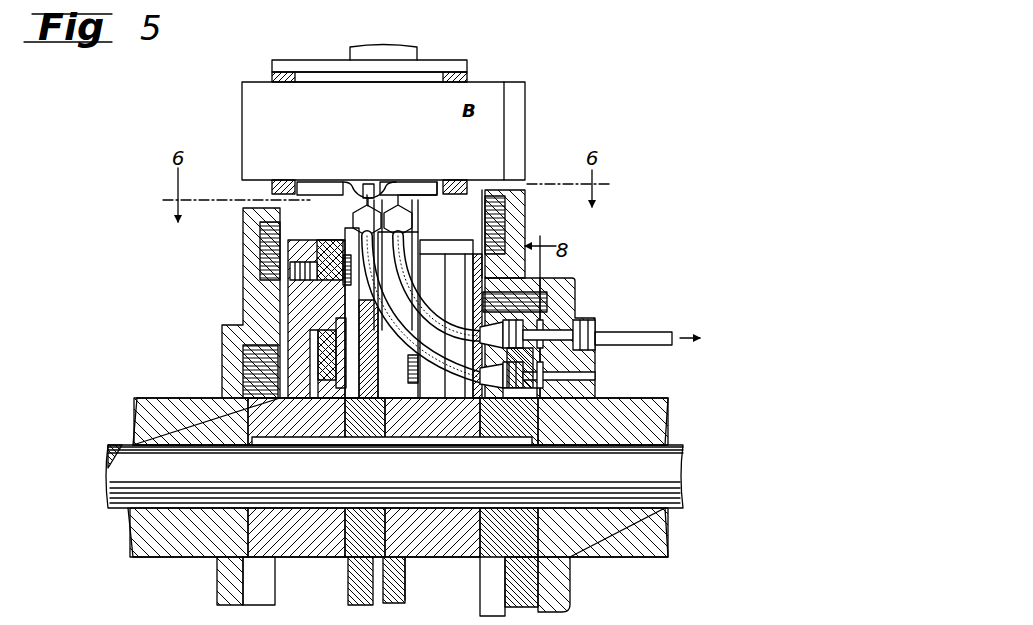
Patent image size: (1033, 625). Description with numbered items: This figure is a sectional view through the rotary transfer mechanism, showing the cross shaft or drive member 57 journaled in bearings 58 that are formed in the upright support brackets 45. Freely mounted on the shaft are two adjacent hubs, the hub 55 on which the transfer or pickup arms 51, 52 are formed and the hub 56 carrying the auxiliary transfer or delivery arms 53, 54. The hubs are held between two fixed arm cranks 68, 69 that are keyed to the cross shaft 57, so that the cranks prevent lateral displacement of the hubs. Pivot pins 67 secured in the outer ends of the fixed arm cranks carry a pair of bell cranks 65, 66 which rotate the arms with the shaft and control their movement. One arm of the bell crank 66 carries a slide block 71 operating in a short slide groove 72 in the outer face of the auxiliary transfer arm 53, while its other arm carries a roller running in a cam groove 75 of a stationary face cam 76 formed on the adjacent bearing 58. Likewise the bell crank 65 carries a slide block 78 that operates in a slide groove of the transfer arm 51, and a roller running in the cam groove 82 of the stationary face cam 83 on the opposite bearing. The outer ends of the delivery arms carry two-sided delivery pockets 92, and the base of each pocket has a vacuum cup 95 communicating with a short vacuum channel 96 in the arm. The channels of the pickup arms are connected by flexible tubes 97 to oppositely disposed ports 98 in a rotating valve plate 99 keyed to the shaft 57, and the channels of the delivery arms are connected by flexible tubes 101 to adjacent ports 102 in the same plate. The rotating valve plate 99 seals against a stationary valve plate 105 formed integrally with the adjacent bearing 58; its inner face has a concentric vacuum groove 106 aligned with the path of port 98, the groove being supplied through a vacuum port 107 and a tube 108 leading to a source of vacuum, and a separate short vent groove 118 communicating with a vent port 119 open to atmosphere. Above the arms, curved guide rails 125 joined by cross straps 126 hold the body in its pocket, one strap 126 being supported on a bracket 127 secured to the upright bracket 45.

The upright support bracket 45 is at (224, 595).
The transfer or pickup arm 51 is at (418, 190).
The transfer or pickup arm 52 is at (398, 591).
The auxiliary transfer or delivery arm 53 is at (392, 190).
The auxiliary transfer or delivery arm 54 is at (356, 593).
The hub 55 is at (410, 563).
The hub 56 is at (352, 552).
The cross shaft or drive member 57 is at (682, 457).
The bearing 58 is at (655, 419).
The bell crank 65 is at (430, 240).
The bell crank 66 is at (332, 240).
The pivot pin 67 is at (349, 276).
The fixed arm crank 68 is at (462, 240).
The fixed arm crank 69 is at (306, 243).
The slide block 71 is at (350, 360).
The slide groove 72 is at (342, 381).
The cam groove 75 is at (258, 234).
The stationary face cam 76 is at (252, 270).
The slide block 78 is at (378, 379).
The cam groove 82 is at (507, 224).
The stationary face cam 83 is at (522, 206).
The delivery pocket 92 is at (313, 186).
The vacuum cup 95 is at (365, 184).
The vacuum channel 96 is at (370, 190).
The flexible tube 97 is at (420, 294).
The port 98 is at (548, 312).
The rotating valve plate 99 is at (510, 591).
The flexible tube 101 is at (387, 302).
The port 102 is at (514, 390).
The stationary valve plate 105 is at (576, 285).
The vacuum groove 106 is at (556, 327).
The vacuum port 107 is at (582, 350).
The tube 108 is at (657, 338).
The vent groove 118 is at (556, 385).
The vent port 119 is at (590, 379).
The curved guide rail 125 is at (272, 77).
The cross strap 126 is at (432, 63).
The bracket 127 is at (385, 38).